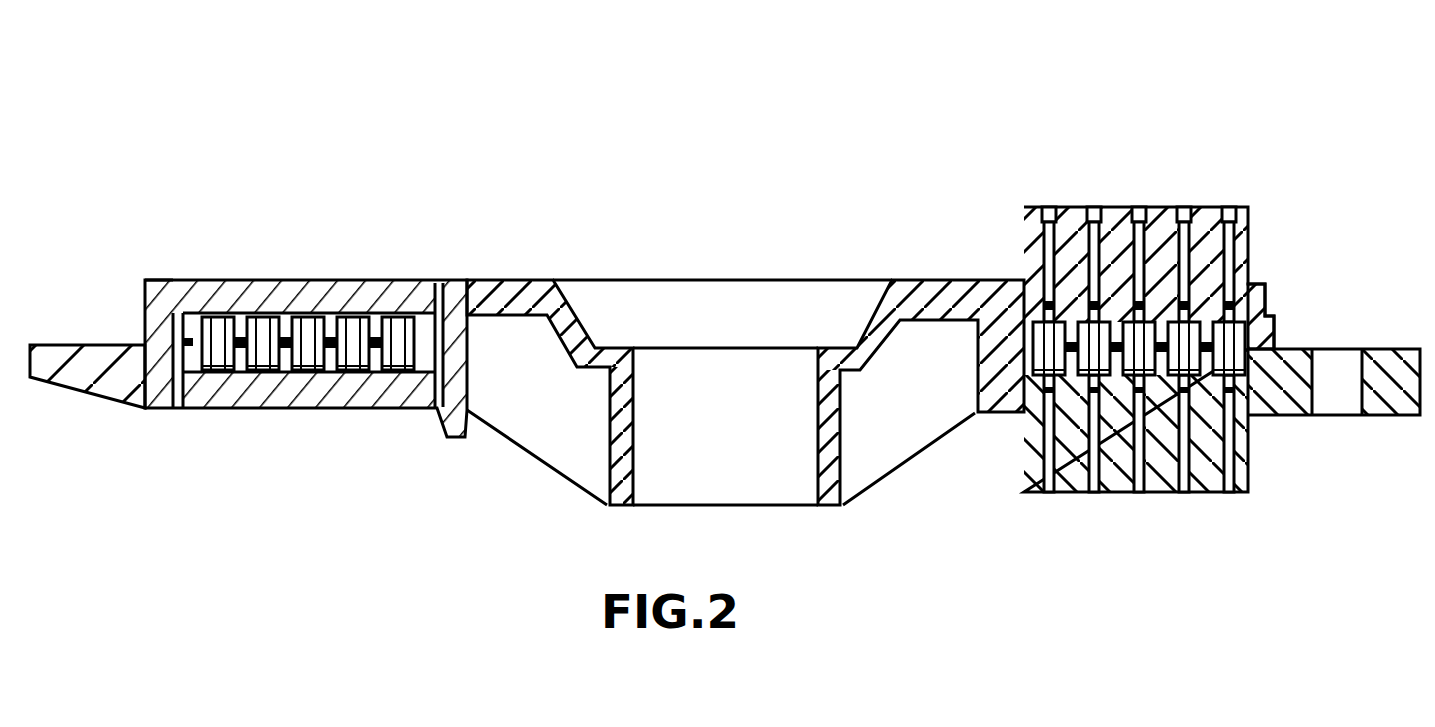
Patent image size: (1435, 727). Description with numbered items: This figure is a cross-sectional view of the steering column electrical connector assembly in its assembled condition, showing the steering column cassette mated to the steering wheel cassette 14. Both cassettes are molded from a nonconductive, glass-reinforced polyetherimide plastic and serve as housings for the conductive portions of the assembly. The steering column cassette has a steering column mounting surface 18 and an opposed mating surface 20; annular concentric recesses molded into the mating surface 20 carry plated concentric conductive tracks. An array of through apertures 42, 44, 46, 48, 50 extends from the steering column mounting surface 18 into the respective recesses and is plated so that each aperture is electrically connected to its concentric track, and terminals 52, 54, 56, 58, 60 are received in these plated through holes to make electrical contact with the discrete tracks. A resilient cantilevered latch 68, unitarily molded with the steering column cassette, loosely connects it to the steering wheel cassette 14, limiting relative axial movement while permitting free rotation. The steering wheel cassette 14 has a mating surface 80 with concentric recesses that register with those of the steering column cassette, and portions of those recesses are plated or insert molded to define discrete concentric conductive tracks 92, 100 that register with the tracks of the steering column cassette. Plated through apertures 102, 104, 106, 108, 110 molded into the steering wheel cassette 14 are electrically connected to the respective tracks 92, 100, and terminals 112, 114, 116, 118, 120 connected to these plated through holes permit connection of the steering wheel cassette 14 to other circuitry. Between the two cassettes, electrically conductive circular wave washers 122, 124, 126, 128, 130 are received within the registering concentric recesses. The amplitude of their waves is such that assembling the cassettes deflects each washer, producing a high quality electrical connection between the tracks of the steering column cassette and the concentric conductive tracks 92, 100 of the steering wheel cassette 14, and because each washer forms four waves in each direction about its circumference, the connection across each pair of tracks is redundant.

The steering wheel cassette 14 is at (1252, 172).
The steering column mounting surface 18 is at (268, 410).
The mating surface 20 is at (147, 372).
The through aperture 42 is at (1223, 493).
The through aperture 44 is at (1181, 493).
The through aperture 46 is at (1134, 493).
The through aperture 48 is at (1085, 493).
The through aperture 50 is at (1042, 493).
The terminal 52 is at (1233, 443).
The terminal 54 is at (1210, 493).
The terminal 56 is at (1160, 432).
The terminal 58 is at (1087, 440).
The terminal 60 is at (1028, 493).
The resilient cantilevered latch 68 is at (152, 296).
The mating surface 80 is at (1313, 350).
The concentric conductive track 92 is at (1270, 333).
The concentric conductive track 100 is at (1036, 322).
The through aperture 102 is at (1230, 205).
The through aperture 104 is at (1183, 210).
The through aperture 106 is at (1137, 207).
The through aperture 108 is at (1093, 207).
The through aperture 110 is at (1053, 208).
The terminal 112 is at (1240, 247).
The terminal 114 is at (1180, 273).
The terminal 116 is at (1112, 222).
The terminal 118 is at (1044, 233).
The terminal 120 is at (1024, 258).
The circular wave washer 122 is at (213, 330).
The circular wave washer 124 is at (258, 328).
The circular wave washer 126 is at (305, 330).
The circular wave washer 128 is at (350, 330).
The circular wave washer 130 is at (398, 330).